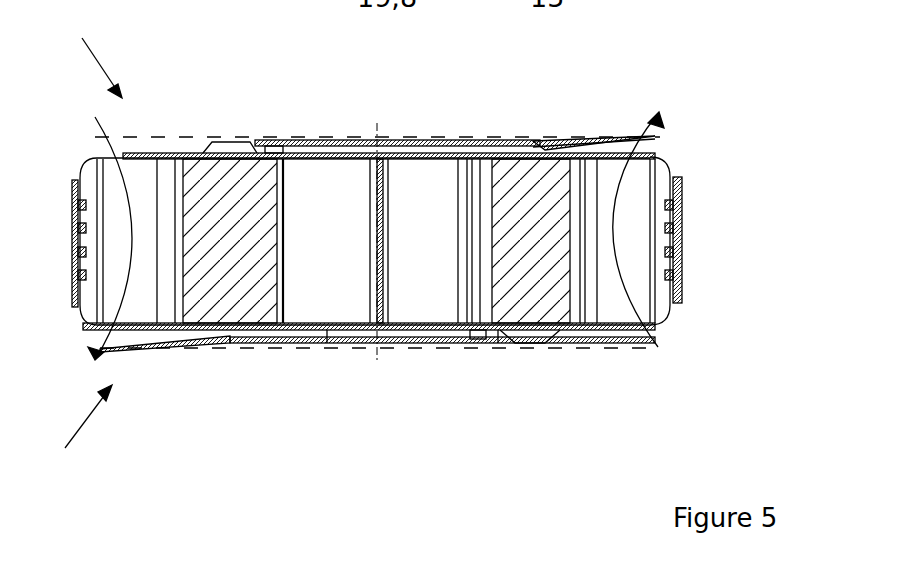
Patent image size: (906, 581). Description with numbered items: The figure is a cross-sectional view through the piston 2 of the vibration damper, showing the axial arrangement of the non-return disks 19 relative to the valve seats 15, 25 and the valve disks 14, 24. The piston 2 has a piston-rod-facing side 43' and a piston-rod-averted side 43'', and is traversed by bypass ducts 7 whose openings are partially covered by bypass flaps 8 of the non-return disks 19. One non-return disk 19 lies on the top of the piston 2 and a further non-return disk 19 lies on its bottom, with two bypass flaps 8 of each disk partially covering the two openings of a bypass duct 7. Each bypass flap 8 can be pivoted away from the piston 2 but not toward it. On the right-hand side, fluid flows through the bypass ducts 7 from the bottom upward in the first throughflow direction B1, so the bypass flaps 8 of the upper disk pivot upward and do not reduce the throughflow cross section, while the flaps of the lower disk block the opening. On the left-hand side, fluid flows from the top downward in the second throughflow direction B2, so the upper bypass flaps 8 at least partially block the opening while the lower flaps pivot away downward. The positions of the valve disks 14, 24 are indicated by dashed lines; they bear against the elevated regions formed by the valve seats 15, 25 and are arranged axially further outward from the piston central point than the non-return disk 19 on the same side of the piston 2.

The piston 2 is at (238, 253).
The bypass duct 7 is at (128, 251).
The bypass flap 8 is at (620, 132).
The first valve disk 14 is at (203, 137).
The first valve seat 15 is at (325, 137).
The non-return disk 19 is at (162, 350).
The second valve disk 24 is at (498, 348).
The second valve seat 25 is at (327, 347).
The piston-rod-facing side of the piston 43' is at (97, 53).
The piston-rod-averted side of the piston 43'' is at (77, 437).
The first throughflow direction B1 is at (676, 122).
The second throughflow direction B2 is at (73, 362).